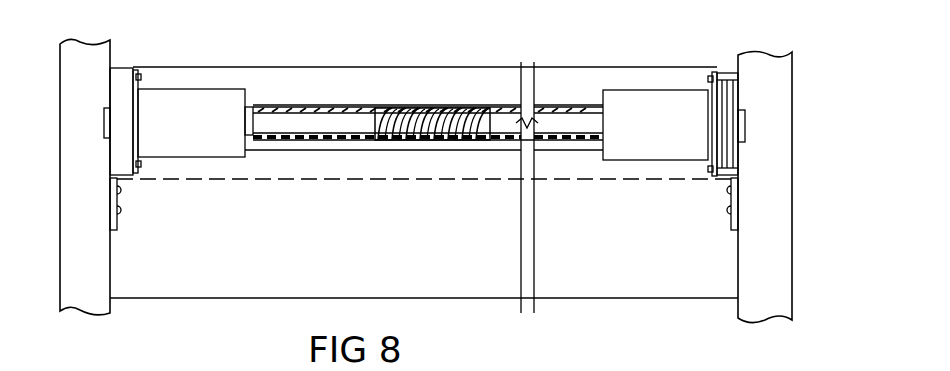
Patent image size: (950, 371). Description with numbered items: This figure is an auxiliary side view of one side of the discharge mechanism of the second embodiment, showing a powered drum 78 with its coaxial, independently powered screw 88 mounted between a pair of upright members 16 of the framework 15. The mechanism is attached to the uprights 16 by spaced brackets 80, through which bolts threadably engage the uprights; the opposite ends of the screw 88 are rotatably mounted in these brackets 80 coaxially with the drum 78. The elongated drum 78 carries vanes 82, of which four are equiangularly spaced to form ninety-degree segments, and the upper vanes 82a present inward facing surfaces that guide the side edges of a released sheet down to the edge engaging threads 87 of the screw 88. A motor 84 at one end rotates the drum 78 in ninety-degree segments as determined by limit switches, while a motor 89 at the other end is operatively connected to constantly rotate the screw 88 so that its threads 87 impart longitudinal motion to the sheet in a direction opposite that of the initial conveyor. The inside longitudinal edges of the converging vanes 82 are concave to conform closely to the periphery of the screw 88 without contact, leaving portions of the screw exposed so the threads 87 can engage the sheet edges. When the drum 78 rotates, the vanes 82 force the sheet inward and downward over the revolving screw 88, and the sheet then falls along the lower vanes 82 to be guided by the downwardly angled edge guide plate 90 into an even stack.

The framework 15 is at (429, 180).
The upright member 16 is at (70, 202).
The powered drum 78 is at (263, 66).
The bracket 80 is at (124, 67).
The vane 82 is at (329, 125).
The upper vane 82a is at (403, 70).
The motor 84 is at (200, 131).
The thread 87 is at (408, 125).
The screw 88 is at (422, 110).
The motor 89 is at (661, 137).
The edge guide plate 90 is at (336, 242).